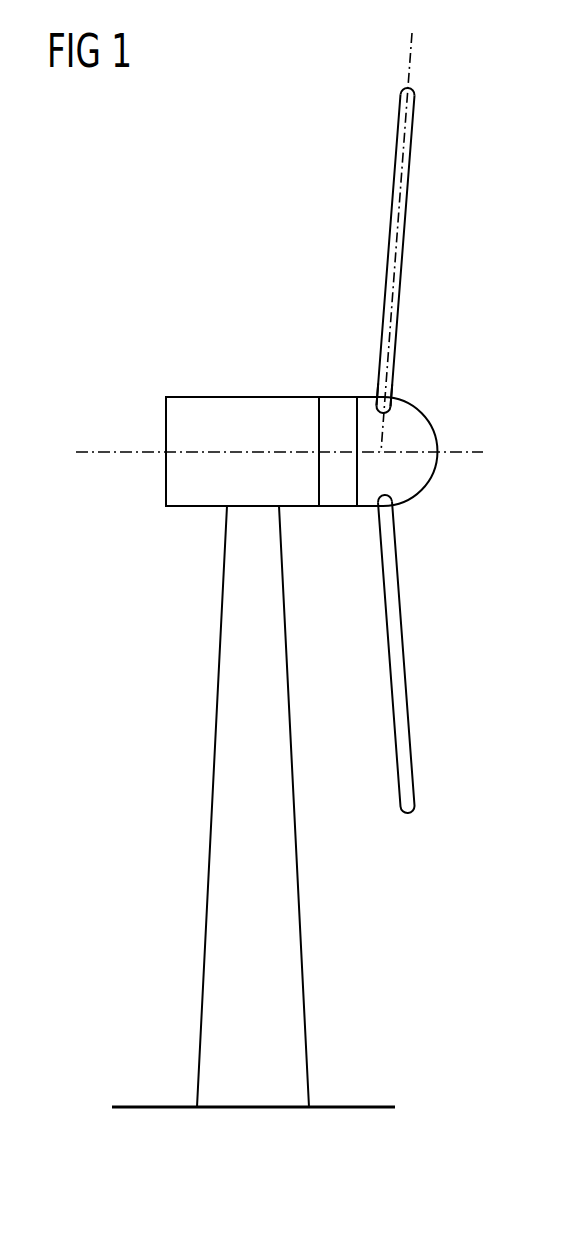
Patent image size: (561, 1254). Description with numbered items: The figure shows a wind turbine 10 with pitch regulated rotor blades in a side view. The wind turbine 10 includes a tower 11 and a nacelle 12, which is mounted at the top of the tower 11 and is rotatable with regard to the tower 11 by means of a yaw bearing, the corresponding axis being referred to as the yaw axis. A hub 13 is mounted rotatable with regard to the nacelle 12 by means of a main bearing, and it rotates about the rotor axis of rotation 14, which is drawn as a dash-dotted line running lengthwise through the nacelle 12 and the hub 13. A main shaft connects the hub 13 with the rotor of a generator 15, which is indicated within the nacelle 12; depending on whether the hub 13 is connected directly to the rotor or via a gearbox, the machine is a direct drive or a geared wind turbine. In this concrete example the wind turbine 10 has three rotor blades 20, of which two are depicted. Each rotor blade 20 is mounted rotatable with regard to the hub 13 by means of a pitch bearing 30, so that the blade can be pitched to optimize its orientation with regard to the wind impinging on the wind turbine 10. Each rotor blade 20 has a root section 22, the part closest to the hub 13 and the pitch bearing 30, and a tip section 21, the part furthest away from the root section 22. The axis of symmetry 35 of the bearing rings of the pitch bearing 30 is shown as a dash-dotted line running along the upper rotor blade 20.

The wind turbine 10 is at (124, 669).
The tower 11 is at (292, 893).
The nacelle 12 is at (226, 397).
The hub 13 is at (423, 428).
The rotor axis of rotation 14 is at (95, 452).
The generator 15 is at (337, 494).
The rotor blade 20 is at (403, 238).
The tip section 21 is at (409, 103).
The root section 22 is at (378, 390).
The pitch bearing 30 is at (396, 408).
The axis of symmetry 35 is at (410, 48).